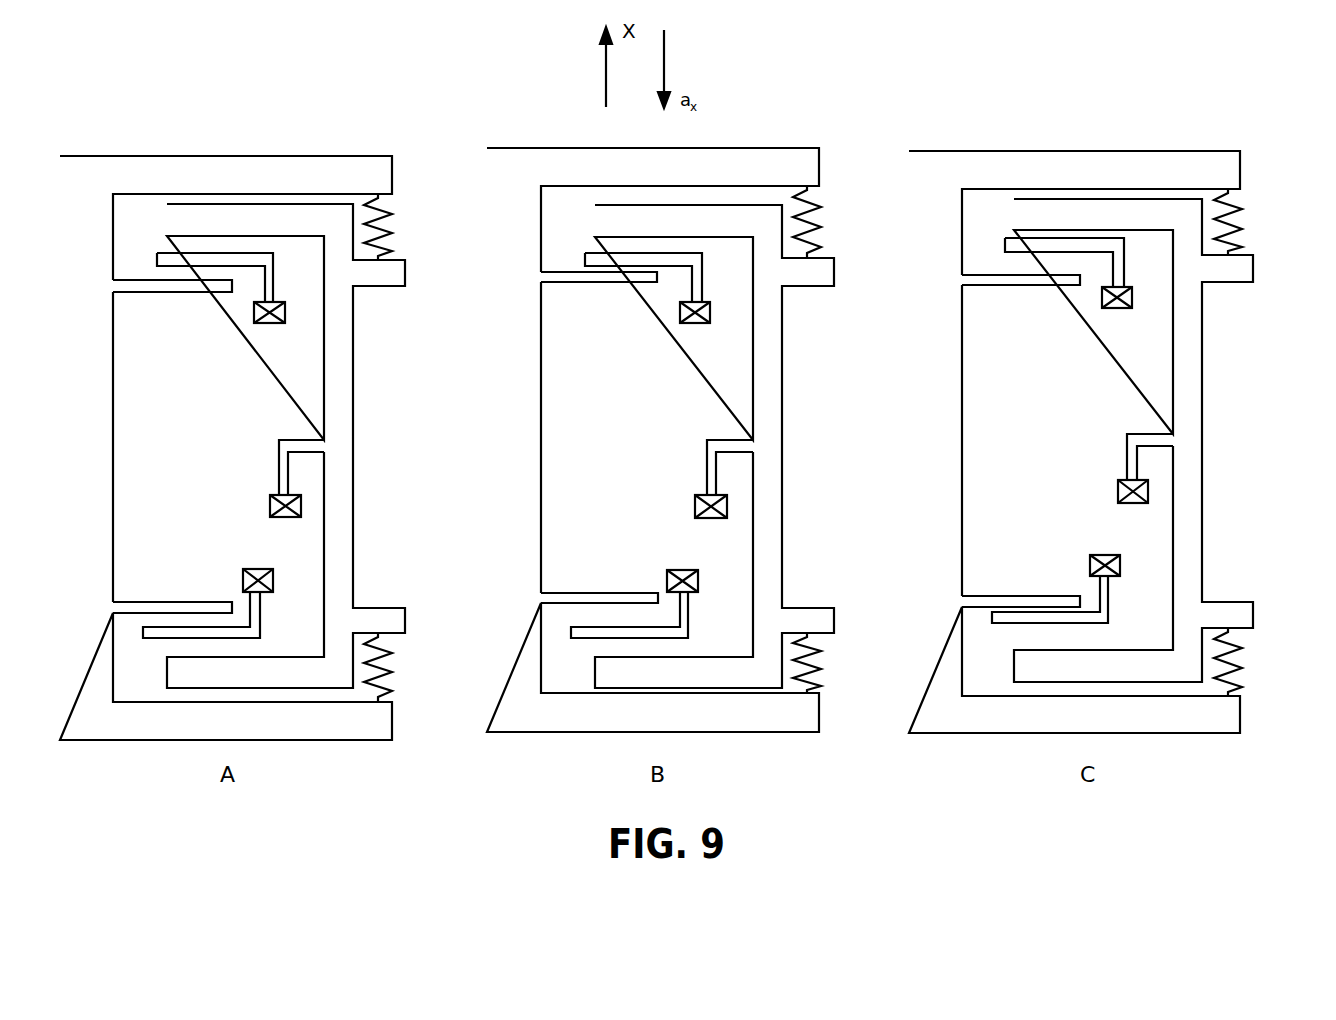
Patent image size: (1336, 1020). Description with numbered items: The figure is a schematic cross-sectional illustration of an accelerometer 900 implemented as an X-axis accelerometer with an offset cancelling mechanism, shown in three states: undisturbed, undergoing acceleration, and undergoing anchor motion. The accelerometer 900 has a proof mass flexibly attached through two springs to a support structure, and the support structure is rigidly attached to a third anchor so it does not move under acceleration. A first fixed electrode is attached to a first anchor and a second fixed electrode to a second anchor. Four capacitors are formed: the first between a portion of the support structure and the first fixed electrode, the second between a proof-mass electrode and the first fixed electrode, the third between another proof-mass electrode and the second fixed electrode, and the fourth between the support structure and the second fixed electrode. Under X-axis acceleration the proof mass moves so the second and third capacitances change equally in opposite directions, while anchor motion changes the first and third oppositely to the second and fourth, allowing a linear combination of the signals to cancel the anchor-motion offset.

The accelerometer 900 is at (858, 45).